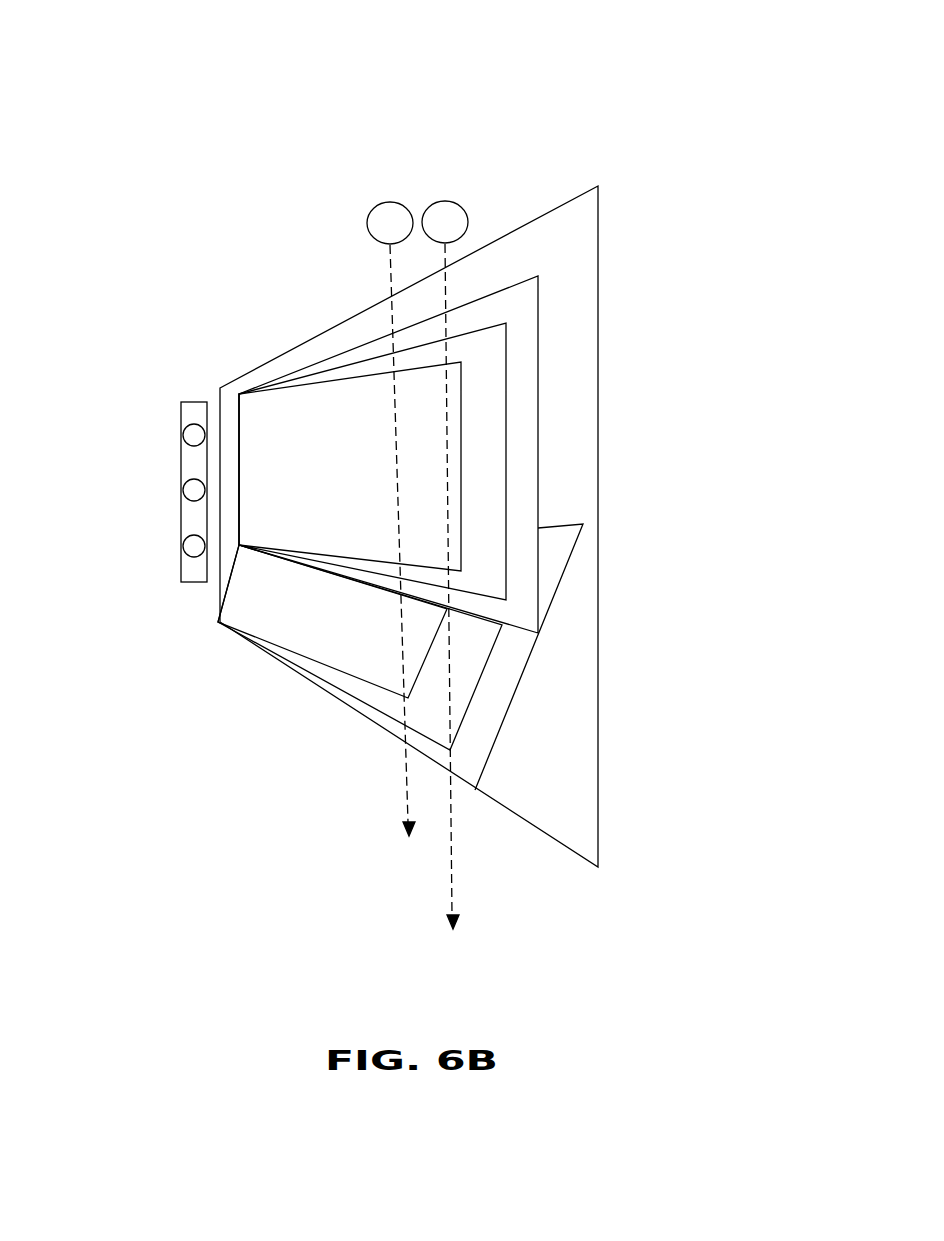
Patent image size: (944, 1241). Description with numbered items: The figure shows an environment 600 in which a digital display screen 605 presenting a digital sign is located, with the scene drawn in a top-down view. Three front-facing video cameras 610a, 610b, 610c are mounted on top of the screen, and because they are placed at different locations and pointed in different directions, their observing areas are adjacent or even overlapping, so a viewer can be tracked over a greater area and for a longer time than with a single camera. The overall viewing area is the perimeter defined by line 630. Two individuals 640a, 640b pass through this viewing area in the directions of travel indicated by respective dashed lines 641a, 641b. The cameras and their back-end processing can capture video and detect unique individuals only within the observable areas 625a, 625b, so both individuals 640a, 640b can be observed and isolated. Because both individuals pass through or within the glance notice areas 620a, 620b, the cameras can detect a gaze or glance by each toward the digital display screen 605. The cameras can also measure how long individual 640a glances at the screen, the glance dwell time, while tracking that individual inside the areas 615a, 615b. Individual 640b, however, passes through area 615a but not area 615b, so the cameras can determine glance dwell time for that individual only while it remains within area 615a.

The environment 600 is at (428, 31).
The digital display screen 605 is at (185, 400).
The front-facing video camera 610a is at (180, 435).
The front-facing video camera 610b is at (180, 490).
The front-facing video camera 610c is at (180, 546).
The glance dwell time area 615a is at (362, 482).
The glance dwell time area 615b is at (342, 625).
The glance notice area 620a is at (507, 452).
The glance notice area 620b is at (468, 708).
The observable area 625a is at (538, 298).
The observable area 625b is at (523, 670).
The line defining overall viewing area 630 is at (598, 352).
The individual 640a is at (373, 206).
The individual 640b is at (460, 208).
The dashed line indicating direction of travel 641a is at (408, 803).
The dashed line indicating direction of travel 641b is at (452, 878).